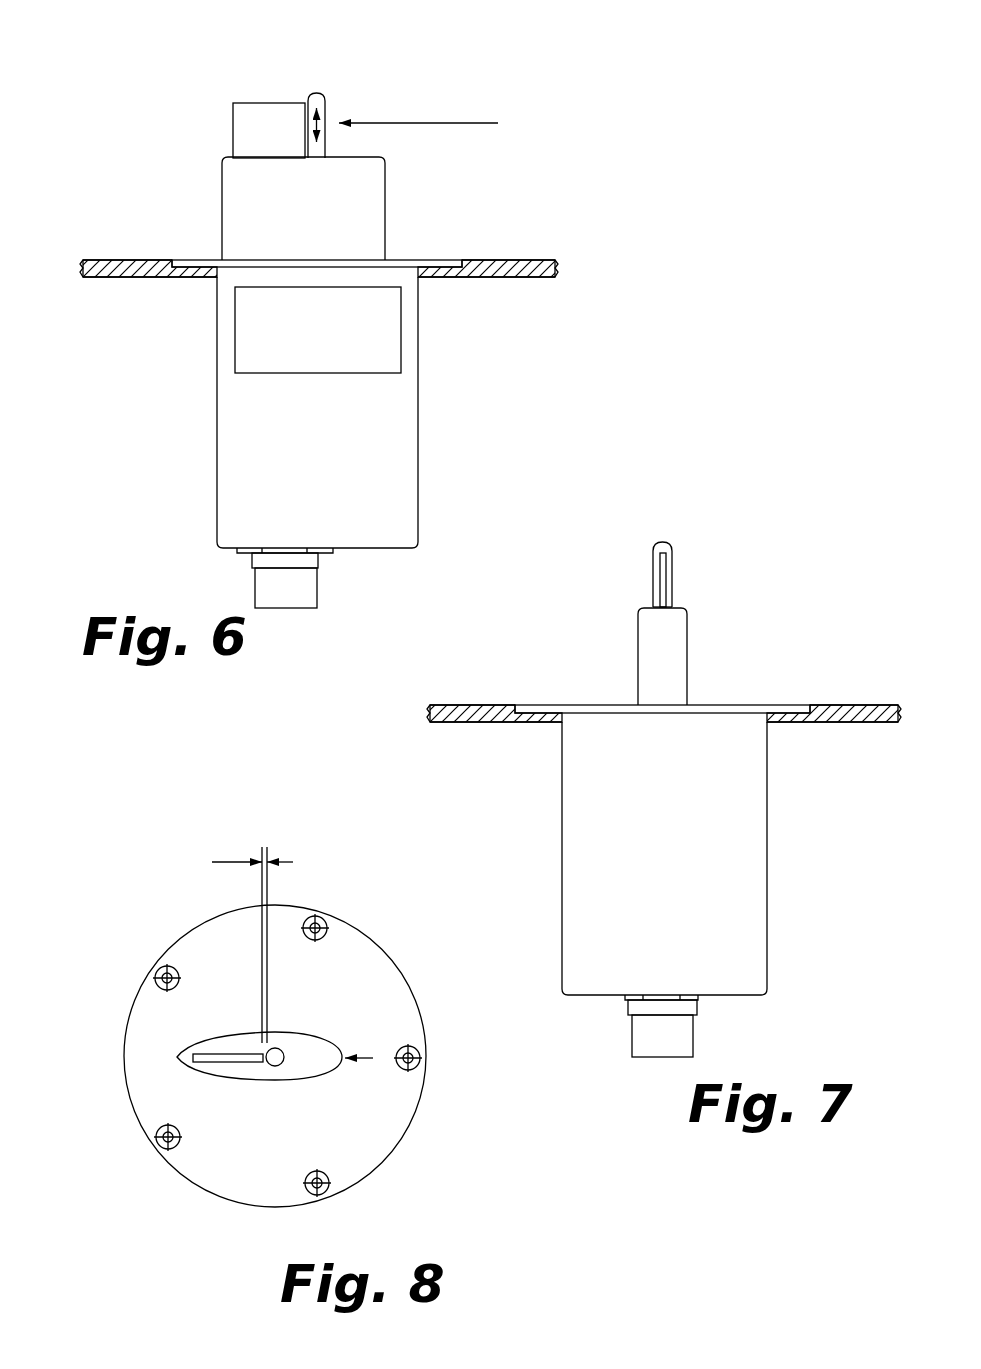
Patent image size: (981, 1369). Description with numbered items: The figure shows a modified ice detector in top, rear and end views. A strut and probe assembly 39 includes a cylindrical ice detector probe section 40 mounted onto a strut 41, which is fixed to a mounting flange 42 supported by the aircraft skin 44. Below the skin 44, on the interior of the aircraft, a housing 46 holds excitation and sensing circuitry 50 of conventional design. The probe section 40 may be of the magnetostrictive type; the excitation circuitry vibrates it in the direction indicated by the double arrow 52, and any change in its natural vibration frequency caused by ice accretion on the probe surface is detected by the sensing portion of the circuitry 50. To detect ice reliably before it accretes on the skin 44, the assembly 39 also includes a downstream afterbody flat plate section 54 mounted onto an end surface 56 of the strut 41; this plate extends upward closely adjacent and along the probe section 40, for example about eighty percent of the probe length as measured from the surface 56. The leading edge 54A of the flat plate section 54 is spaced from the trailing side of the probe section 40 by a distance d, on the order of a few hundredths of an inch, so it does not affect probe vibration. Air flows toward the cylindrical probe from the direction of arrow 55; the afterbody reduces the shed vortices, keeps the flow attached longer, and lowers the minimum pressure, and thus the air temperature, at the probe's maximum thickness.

In FIG. 6, the strut and probe assembly 39 is at (206, 46).
In FIG. 7, the strut and probe assembly 39 is at (584, 502).
In FIG. 8, the strut and probe assembly 39 is at (147, 1120).
In FIG. 6, the ice detector probe section 40 is at (369, 120).
In FIG. 7, the ice detector probe section 40 is at (720, 570).
In FIG. 6, the strut 41 is at (244, 169).
In FIG. 7, the strut 41 is at (561, 629).
In FIG. 8, the strut 41 is at (170, 1166).
In FIG. 6, the mounting flange 42 is at (282, 198).
In FIG. 7, the mounting flange 42 is at (666, 668).
In FIG. 8, the mounting flange 42 is at (242, 1056).
In FIG. 6, the aircraft skin 44 is at (300, 224).
In FIG. 7, the aircraft skin 44 is at (640, 662).
In FIG. 6, the housing 46 is at (260, 442).
In FIG. 7, the housing 46 is at (608, 889).
In FIG. 6, the excitation and sensing circuitry 50 is at (371, 283).
In FIG. 6, the double arrow 52 is at (395, 138).
In FIG. 6, the afterbody flat plate section 54 is at (206, 97).
In FIG. 7, the afterbody flat plate section 54 is at (598, 563).
In FIG. 8, the afterbody flat plate section 54 is at (225, 954).
In FIG. 8, the leading edge of the flat plate section 54A is at (356, 1150).
In FIG. 6, the airflow direction arrow 55 is at (440, 92).
In FIG. 8, the airflow direction arrow 55 is at (435, 1002).
In FIG. 7, the end surface of the strut 56 is at (724, 586).
In FIG. 8, the end surface of the strut 56 is at (322, 983).